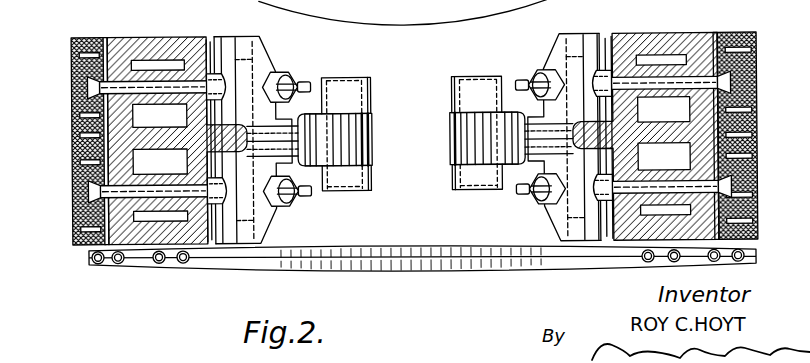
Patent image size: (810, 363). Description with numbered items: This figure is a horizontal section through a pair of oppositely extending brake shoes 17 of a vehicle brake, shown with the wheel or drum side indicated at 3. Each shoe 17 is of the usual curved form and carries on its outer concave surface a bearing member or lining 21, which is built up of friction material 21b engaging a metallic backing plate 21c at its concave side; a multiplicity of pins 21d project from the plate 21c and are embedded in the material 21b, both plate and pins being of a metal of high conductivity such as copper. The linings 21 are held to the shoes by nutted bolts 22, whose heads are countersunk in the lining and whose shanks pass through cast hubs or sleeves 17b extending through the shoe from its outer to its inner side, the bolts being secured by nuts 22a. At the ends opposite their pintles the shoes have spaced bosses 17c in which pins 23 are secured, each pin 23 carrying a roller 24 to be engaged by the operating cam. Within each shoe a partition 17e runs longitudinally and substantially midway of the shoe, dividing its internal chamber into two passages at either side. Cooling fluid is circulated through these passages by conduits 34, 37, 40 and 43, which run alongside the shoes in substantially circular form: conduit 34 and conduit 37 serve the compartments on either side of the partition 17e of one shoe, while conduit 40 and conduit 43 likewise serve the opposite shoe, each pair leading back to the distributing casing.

The grinding wheel 3 is at (405, 0).
The brake shoe 17 is at (161, 38).
The cast hub or sleeve 17b is at (181, 172).
The spaced boss 17c is at (450, 96).
The partition 17e is at (139, 135).
The bearing member or lining 21 is at (753, 56).
The friction material 21b is at (78, 148).
The metallic backing plate 21c is at (112, 24).
The pin 21d is at (74, 126).
The nutted bolt 22 is at (190, 80).
The nut 22a is at (525, 89).
The pin 23 is at (411, 127).
The roller 24 is at (455, 139).
The conduit 34 is at (97, 262).
The conduit 37 is at (118, 262).
The conduit 40 is at (160, 262).
The conduit 43 is at (196, 265).